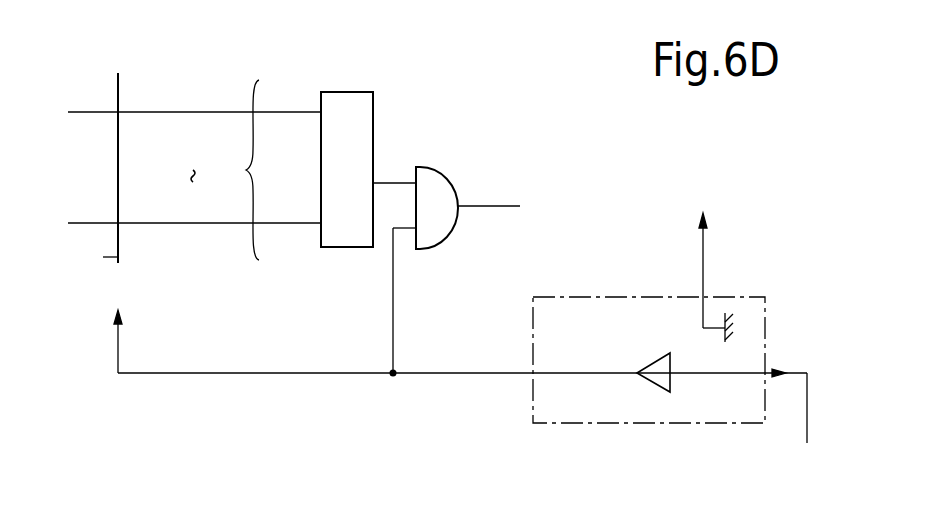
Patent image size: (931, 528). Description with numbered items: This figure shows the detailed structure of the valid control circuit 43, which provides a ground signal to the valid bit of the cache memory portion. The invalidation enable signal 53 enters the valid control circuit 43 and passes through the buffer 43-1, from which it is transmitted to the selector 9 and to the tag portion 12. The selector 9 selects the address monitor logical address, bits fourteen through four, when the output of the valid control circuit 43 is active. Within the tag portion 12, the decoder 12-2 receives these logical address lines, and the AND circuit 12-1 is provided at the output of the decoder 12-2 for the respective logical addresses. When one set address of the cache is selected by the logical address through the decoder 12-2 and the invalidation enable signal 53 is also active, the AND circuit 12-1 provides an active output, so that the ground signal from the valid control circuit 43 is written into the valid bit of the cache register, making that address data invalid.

The selector 9 is at (118, 257).
The tag portion 12 is at (298, 262).
The decoder 12-2 is at (375, 93).
The AND circuit 12-1 is at (447, 233).
The invalidation enable signal 53 is at (425, 377).
The valid control circuit 43 is at (765, 298).
The buffer 43-1 is at (640, 380).